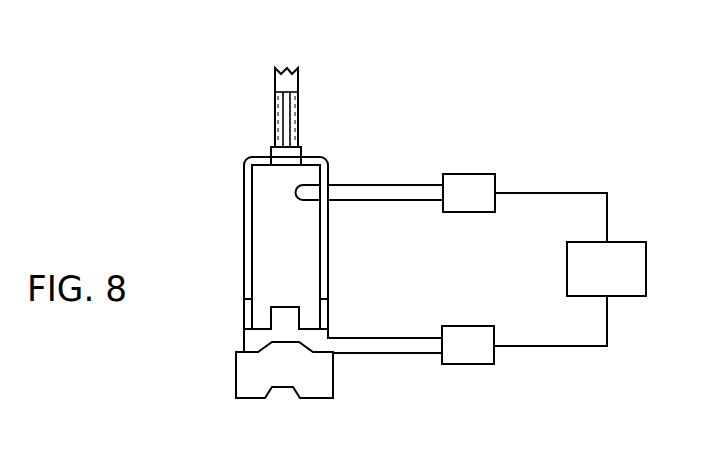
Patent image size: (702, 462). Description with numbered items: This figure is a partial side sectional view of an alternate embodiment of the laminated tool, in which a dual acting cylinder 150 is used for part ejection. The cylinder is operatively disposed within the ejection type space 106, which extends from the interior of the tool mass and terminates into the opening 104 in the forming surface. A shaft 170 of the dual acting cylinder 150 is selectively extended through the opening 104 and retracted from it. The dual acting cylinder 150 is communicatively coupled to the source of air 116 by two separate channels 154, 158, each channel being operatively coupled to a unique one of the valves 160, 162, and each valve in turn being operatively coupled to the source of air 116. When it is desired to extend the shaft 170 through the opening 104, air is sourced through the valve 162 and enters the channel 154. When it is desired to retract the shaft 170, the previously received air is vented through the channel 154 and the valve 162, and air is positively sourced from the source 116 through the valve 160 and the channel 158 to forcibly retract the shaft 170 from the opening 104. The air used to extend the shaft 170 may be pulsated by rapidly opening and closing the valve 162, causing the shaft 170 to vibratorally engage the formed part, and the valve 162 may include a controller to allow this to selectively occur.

The opening 104 is at (287, 73).
The shaft 170 is at (285, 123).
The dual acting cylinder 150 is at (334, 155).
The ejection type space 106 is at (249, 213).
The channel 158 is at (390, 187).
The valve 160 is at (475, 192).
The source of air 116 is at (587, 267).
The channel 154 is at (392, 337).
The valve 162 is at (474, 352).